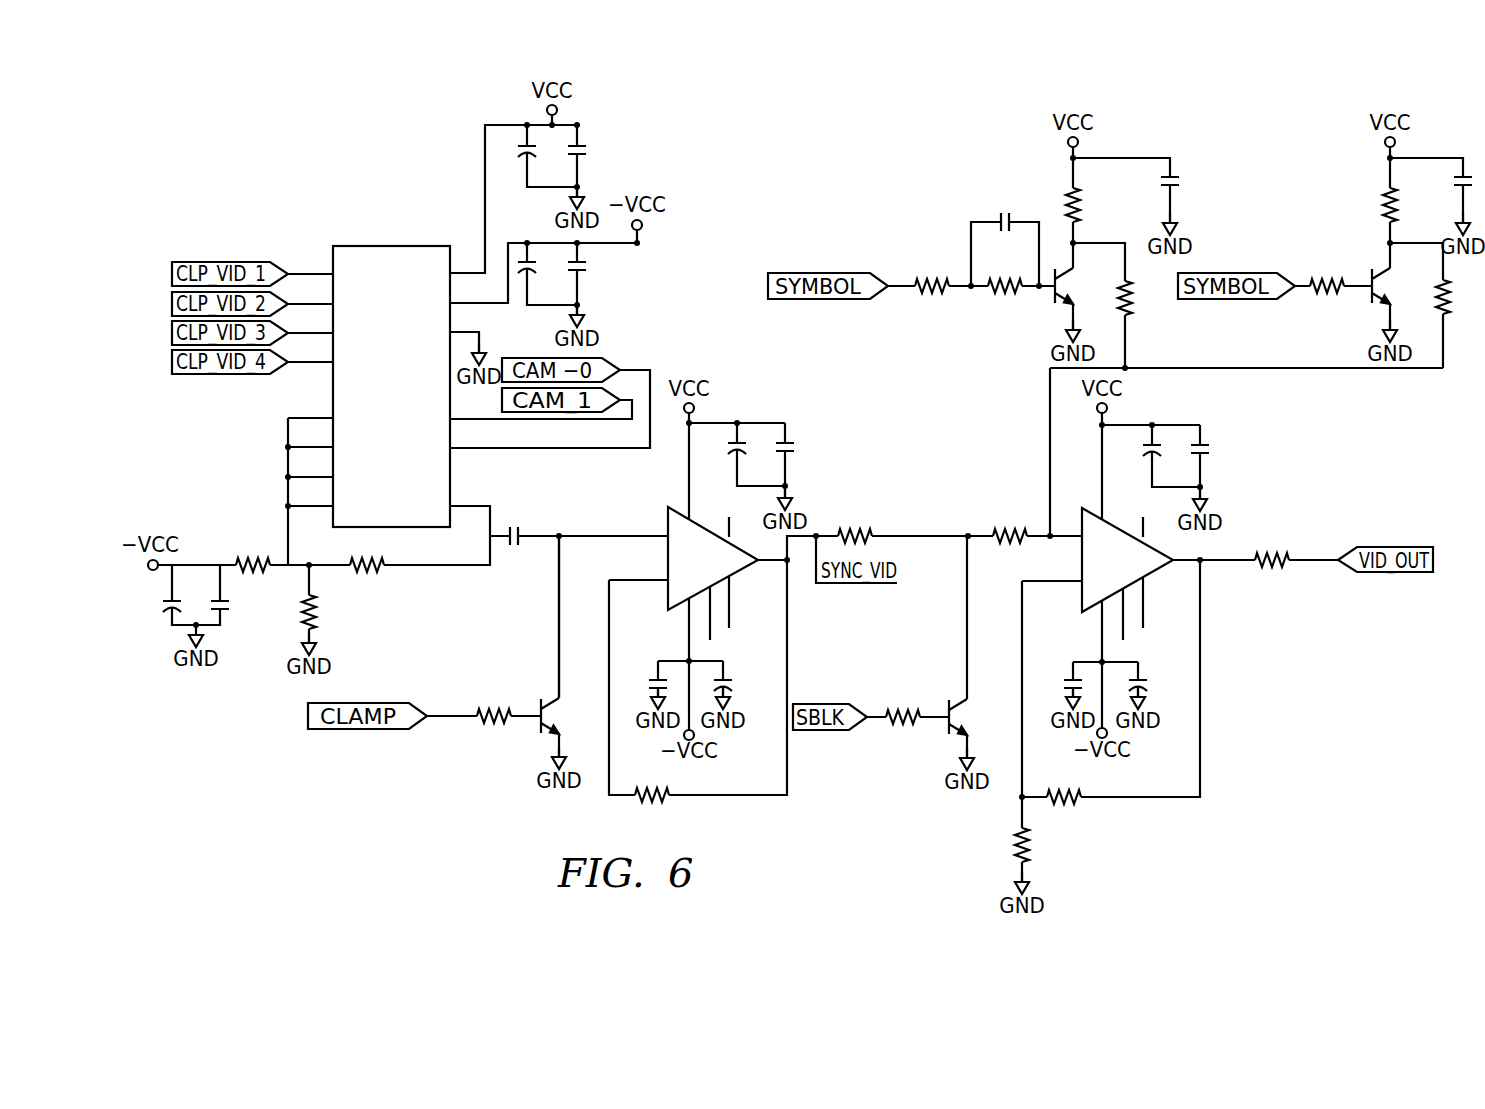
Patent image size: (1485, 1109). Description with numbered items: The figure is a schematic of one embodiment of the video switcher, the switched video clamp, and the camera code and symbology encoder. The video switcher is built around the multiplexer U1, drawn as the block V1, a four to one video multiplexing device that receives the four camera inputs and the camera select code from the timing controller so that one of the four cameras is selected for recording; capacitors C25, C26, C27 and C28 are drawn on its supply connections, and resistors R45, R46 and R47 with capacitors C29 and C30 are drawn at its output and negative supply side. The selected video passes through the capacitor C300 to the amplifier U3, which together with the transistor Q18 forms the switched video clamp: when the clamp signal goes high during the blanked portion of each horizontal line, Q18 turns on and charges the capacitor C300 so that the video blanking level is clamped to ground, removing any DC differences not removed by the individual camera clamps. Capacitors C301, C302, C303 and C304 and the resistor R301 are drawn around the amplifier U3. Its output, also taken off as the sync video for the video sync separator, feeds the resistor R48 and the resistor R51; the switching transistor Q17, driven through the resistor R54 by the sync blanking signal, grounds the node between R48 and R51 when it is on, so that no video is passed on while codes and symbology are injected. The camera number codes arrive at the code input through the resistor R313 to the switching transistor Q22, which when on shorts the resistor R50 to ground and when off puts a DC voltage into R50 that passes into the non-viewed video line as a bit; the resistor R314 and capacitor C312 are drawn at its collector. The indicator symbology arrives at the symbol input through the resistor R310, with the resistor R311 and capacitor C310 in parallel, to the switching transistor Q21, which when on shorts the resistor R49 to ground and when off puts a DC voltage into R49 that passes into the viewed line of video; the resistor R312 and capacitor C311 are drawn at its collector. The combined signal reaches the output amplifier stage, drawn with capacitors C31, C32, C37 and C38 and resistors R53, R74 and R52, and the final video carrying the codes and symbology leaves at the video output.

The video multiplexer/amplifier V1 is at (392, 372).
The capacitor C25 is at (544, 164).
The capacitor C26 is at (599, 152).
The capacitor C27 is at (544, 280).
The capacitor C28 is at (599, 269).
The capacitor C29 is at (188, 591).
The capacitor C30 is at (236, 591).
The capacitor C300 is at (531, 523).
The capacitor C301 is at (762, 462).
The capacitor C302 is at (815, 449).
The capacitor C303 is at (635, 669).
The capacitor C304 is at (750, 670).
The capacitor C31 is at (1169, 464).
The capacitor C32 is at (1222, 450).
The capacitor C37 is at (1159, 671).
The capacitor C38 is at (1054, 670).
The capacitor C310 is at (1005, 207).
The capacitor C311 is at (1199, 181).
The capacitor C312 is at (1434, 181).
The resistor R45 is at (367, 553).
The resistor R46 is at (253, 553).
The resistor R47 is at (330, 612).
The resistor R48 is at (855, 524).
The resistor R49 is at (1147, 298).
The resistor R50 is at (1459, 309).
The resistor R51 is at (1010, 524).
The resistor R52 is at (1272, 536).
The resistor R53 is at (1064, 784).
The resistor R54 is at (903, 702).
The resistor R74 is at (1044, 845).
The feedback resistor R301 is at (652, 782).
The resistor R310 is at (932, 272).
The resistor R311 is at (1005, 272).
The resistor R312 is at (1101, 205).
The resistor R313 is at (1327, 272).
The resistor R314 is at (1363, 205).
The switching transistor Q17 is at (982, 717).
The transistor Q18 is at (573, 716).
The switching transistor Q21 is at (1089, 286).
The switching transistor Q22 is at (1405, 286).
The multiplexer U1 is at (1125, 604).
The amplifier U3 is at (710, 605).